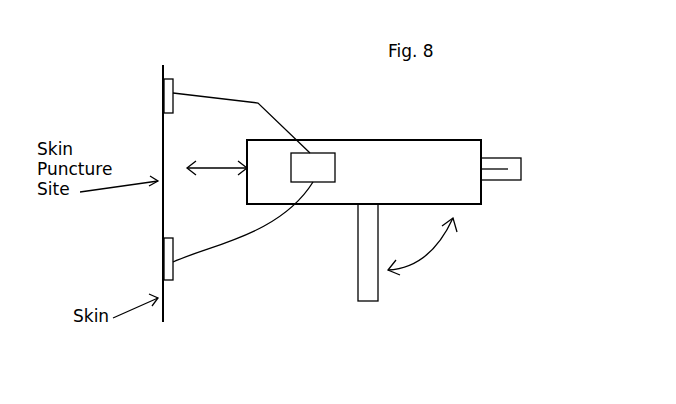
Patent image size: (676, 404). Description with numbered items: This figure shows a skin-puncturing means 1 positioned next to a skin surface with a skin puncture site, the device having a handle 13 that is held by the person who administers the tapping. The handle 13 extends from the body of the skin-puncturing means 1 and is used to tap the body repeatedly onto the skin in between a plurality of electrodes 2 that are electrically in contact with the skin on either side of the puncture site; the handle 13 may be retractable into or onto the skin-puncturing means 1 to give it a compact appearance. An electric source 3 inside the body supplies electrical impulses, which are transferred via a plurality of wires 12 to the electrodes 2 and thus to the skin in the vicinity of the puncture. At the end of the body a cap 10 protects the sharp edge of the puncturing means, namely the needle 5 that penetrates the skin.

The skin-puncturing means 1 is at (434, 155).
The electrodes 2 is at (168, 280).
The electric source 3 is at (323, 160).
The needle 5 is at (497, 168).
The cap 10 is at (517, 158).
The wires 12 is at (213, 250).
The handle 13 is at (365, 280).